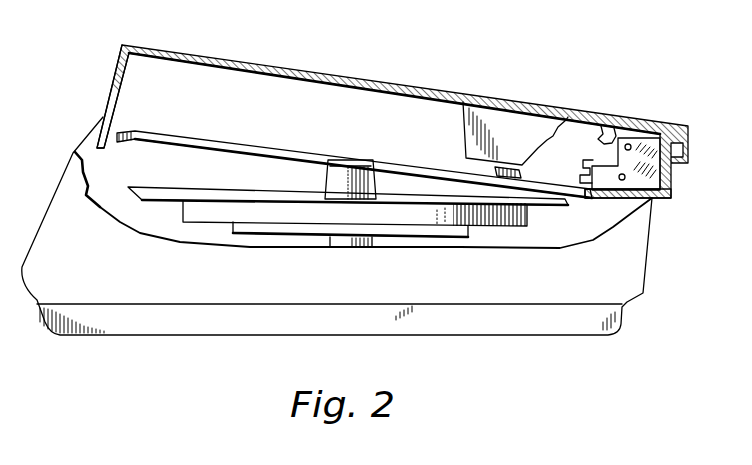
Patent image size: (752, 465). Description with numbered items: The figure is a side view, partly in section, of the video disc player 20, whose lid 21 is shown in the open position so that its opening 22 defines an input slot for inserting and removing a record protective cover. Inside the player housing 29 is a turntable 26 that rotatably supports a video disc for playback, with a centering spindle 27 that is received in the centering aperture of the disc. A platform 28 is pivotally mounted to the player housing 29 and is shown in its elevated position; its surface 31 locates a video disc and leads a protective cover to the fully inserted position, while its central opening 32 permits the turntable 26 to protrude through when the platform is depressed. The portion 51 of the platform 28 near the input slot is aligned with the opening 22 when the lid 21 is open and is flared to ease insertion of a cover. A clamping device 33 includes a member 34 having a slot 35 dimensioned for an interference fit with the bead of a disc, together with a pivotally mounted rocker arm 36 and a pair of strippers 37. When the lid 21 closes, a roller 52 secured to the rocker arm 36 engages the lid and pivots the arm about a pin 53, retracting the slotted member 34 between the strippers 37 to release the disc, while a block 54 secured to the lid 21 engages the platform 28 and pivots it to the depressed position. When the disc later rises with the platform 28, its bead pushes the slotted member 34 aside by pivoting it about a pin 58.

The video disc player 20 is at (44, 164).
The lid 21 is at (393, 83).
The opening 22 is at (107, 98).
The turntable 26 is at (142, 200).
The centering spindle 27 is at (333, 174).
The platform 28 is at (220, 130).
The player housing 29 is at (643, 270).
The surface 31 is at (354, 147).
The central opening 32 is at (167, 137).
The clamping device 33 is at (648, 178).
The member 34 is at (585, 170).
The slot 35 is at (583, 175).
The rocker arm 36 is at (627, 144).
The strippers 37 is at (598, 198).
The portion of the platform 51 is at (143, 129).
The roller 52 is at (603, 124).
The pin 53 is at (647, 125).
The block 54 is at (480, 167).
The pin 58 is at (652, 203).